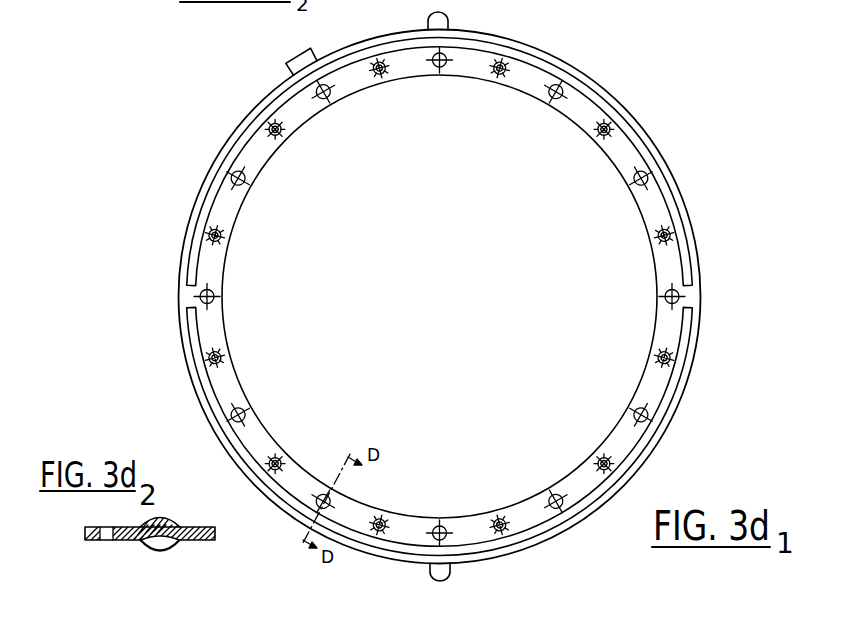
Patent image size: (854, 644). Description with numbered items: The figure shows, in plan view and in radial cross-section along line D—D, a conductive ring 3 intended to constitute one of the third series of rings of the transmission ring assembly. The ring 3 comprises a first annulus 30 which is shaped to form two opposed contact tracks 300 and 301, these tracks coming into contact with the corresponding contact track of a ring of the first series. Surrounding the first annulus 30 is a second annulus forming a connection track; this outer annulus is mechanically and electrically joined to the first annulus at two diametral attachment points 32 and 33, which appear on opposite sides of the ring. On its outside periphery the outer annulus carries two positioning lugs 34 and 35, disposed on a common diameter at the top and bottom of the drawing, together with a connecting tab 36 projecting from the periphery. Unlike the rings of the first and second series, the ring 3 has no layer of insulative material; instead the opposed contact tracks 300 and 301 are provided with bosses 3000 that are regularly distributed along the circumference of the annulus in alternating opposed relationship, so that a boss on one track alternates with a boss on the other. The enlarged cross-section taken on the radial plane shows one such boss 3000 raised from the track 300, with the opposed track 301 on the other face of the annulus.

In FIG. 3d1, the ring 3 is at (187, 389).
In FIG. 3d1, the first annulus 30 is at (231, 389).
In FIG. 3d1, the diametral attachment point 32 is at (181, 293).
In FIG. 3d1, the diametral attachment point 33 is at (688, 298).
In FIG. 3d1, the positioning lug 34 is at (447, 18).
In FIG. 3d1, the positioning lug 35 is at (450, 576).
In FIG. 3d1, the connecting tab 36 is at (286, 68).
In FIG. 3d2, the contact track 300 is at (127, 528).
In FIG. 3d1, the boss 3000 is at (251, 431).
In FIG. 3d2, the boss 3000 is at (160, 517).
In FIG. 3d1, the contact track 301 is at (289, 478).
In FIG. 3d2, the contact track 301 is at (182, 547).